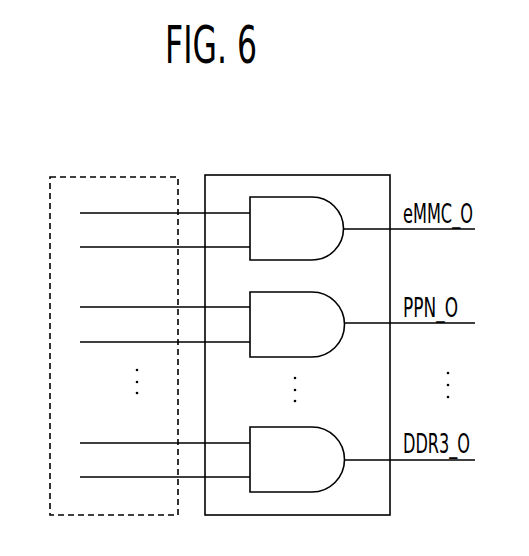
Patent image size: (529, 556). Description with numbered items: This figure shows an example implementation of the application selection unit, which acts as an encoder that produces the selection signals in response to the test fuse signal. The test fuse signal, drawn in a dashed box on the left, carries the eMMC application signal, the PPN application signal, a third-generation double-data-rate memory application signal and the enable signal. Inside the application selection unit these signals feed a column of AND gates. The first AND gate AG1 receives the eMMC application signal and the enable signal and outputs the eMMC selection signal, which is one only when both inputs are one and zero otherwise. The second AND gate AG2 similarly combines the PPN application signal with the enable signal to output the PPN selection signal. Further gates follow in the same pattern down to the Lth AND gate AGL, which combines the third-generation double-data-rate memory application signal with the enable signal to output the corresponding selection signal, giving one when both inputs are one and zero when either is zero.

The first AND gate AG1 is at (297, 228).
The second AND gate AG2 is at (297, 324).
The Lth AND gate AGL is at (297, 459).